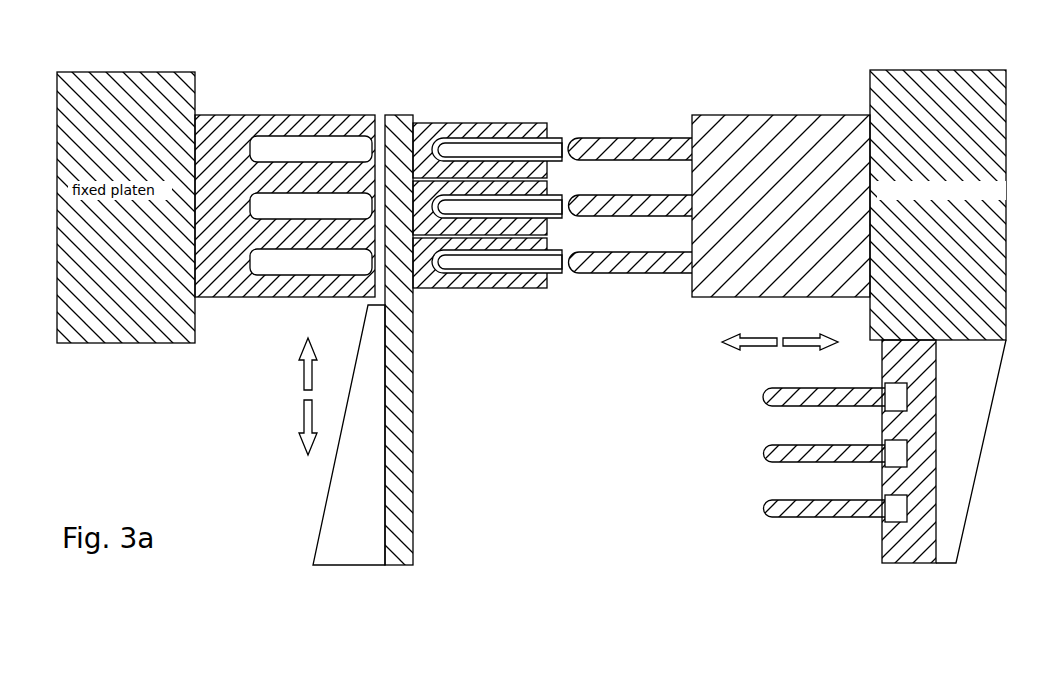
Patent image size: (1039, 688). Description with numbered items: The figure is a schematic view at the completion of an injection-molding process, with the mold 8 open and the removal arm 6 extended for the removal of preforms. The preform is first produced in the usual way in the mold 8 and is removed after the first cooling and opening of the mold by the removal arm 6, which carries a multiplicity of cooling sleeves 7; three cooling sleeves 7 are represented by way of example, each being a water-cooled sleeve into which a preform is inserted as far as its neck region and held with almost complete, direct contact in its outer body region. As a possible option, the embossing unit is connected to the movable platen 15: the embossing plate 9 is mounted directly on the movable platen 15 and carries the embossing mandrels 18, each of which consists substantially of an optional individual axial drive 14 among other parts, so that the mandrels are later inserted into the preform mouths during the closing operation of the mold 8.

The removal arm 6 is at (400, 145).
The cooling sleeve 7 is at (472, 128).
The mold 8 is at (310, 150).
The embossing plate 9 is at (910, 550).
The individual axial drive 14 is at (892, 520).
The movable platen 15 is at (892, 103).
The embossing mandrel 18 is at (785, 508).